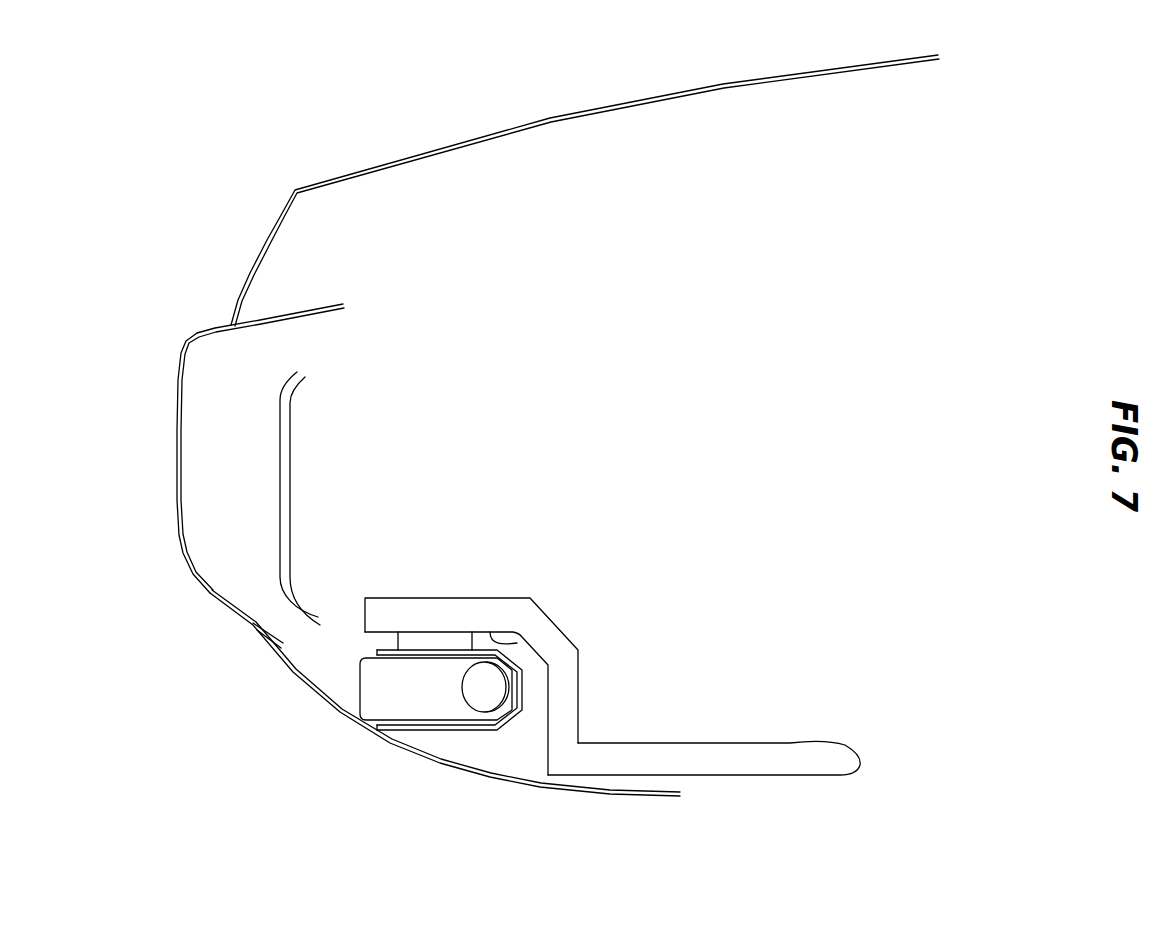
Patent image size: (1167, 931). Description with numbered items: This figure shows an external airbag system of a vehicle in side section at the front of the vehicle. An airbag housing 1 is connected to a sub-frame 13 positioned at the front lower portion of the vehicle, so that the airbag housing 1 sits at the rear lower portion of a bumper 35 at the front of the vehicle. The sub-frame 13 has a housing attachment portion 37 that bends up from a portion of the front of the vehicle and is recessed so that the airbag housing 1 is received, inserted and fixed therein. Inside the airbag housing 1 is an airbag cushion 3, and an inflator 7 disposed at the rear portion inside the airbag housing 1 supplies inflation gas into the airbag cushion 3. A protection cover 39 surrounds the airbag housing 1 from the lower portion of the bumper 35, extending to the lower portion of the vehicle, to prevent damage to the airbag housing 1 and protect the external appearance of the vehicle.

The airbag housing 1 is at (417, 730).
The airbag cushion 3 is at (362, 695).
The inflator 7 is at (487, 693).
The sub-frame 13 is at (685, 743).
The bumper 35 is at (215, 597).
The housing attachment portion 37 is at (517, 643).
The protection cover 39 is at (293, 675).